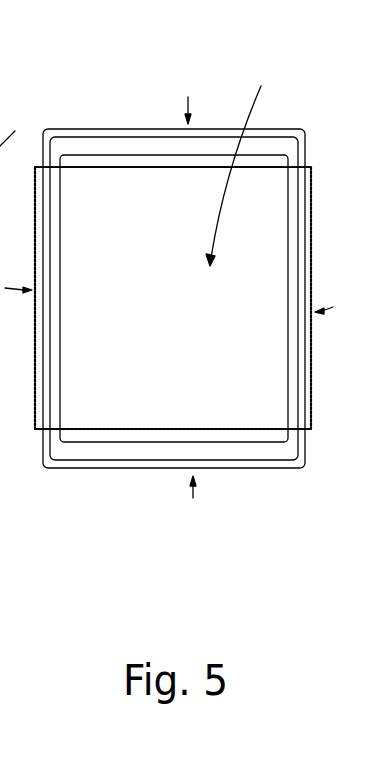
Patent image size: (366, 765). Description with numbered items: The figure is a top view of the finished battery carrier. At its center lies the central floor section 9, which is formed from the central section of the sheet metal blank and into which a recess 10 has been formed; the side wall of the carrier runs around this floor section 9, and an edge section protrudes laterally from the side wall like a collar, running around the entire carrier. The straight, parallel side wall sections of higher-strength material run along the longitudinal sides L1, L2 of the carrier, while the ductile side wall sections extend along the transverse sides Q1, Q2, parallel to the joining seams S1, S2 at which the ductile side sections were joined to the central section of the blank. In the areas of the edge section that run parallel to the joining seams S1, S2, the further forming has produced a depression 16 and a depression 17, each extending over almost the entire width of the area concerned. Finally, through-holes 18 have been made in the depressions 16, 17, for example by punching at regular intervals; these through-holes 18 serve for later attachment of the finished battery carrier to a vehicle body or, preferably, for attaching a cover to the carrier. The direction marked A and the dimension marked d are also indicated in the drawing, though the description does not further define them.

The through-holes 18 is at (83, 128).
The depression 17 is at (140, 129).
The depression 16 is at (140, 470).
The central floor section 9 is at (50, 373).
The recess 10 is at (170, 276).
The joining seam S1 is at (43, 167).
The joining seam S2 is at (245, 430).
The transverse side Q1 is at (190, 499).
The transverse side Q2 is at (187, 99).
The axis A is at (237, 167).
The longitudinal side L1 is at (16, 281).
The longitudinal side L2 is at (328, 302).
The distance d is at (8, 522).